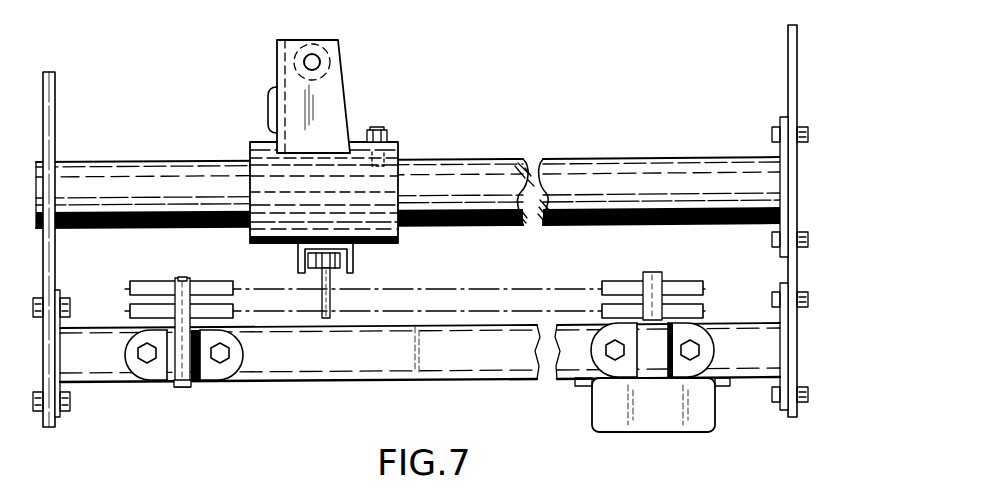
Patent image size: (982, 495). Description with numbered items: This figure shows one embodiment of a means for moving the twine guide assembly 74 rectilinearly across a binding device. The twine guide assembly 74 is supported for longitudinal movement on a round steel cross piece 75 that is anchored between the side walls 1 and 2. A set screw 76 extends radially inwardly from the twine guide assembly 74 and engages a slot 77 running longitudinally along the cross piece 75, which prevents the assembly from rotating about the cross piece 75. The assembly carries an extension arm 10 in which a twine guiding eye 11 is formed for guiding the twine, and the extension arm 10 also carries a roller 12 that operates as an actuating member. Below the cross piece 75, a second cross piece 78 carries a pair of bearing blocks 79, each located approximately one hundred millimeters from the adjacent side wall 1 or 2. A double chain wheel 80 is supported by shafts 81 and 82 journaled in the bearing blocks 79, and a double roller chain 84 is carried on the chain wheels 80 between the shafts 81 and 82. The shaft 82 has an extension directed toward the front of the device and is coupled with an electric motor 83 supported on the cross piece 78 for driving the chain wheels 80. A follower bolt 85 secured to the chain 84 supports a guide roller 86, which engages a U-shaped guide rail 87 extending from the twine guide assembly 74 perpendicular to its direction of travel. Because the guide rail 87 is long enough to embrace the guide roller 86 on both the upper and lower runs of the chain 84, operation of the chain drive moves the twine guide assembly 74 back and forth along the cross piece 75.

The side wall 1 is at (43, 97).
The side wall 2 is at (795, 59).
The extension arm 10 is at (337, 103).
The twine guiding eye 11 is at (268, 97).
The roller 12 is at (318, 48).
The twine guide assembly 74 is at (393, 193).
The round steel cross piece 75 is at (115, 183).
The set screw 76 is at (388, 130).
The slot 77 is at (497, 161).
The second cross piece 78 is at (377, 360).
The bearing block 79 is at (158, 368).
The double chain wheel 80 is at (168, 283).
The shaft 81 is at (190, 305).
The shaft 82 is at (650, 302).
The electric motor 83 is at (597, 400).
The double roller chain 84 is at (427, 287).
The follower bolt 85 is at (323, 322).
The guide roller 86 is at (353, 258).
The U-shaped guide rail 87 is at (297, 258).